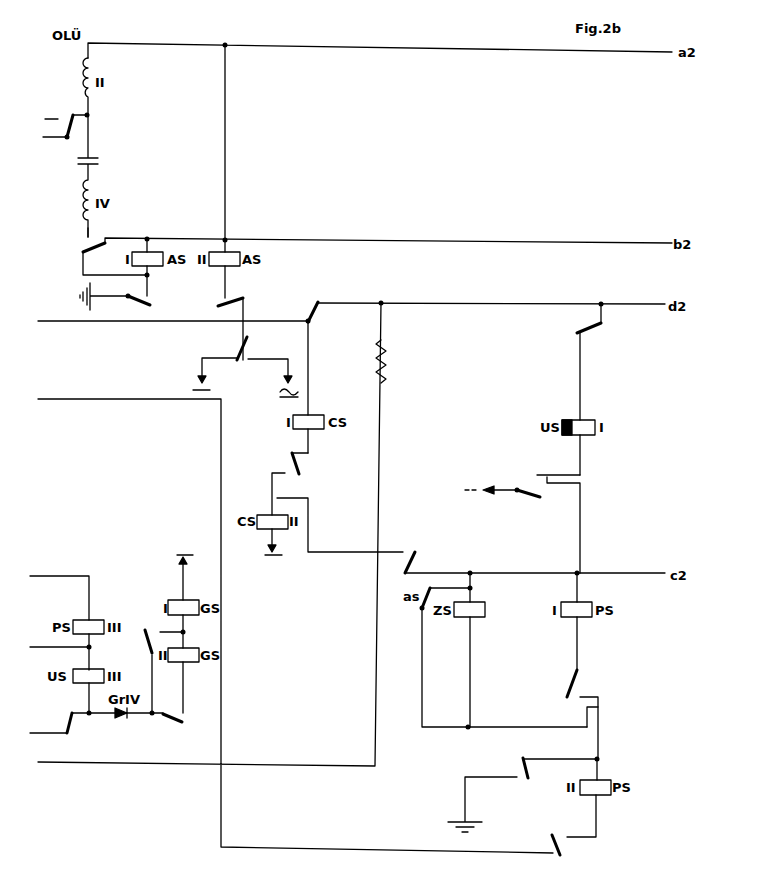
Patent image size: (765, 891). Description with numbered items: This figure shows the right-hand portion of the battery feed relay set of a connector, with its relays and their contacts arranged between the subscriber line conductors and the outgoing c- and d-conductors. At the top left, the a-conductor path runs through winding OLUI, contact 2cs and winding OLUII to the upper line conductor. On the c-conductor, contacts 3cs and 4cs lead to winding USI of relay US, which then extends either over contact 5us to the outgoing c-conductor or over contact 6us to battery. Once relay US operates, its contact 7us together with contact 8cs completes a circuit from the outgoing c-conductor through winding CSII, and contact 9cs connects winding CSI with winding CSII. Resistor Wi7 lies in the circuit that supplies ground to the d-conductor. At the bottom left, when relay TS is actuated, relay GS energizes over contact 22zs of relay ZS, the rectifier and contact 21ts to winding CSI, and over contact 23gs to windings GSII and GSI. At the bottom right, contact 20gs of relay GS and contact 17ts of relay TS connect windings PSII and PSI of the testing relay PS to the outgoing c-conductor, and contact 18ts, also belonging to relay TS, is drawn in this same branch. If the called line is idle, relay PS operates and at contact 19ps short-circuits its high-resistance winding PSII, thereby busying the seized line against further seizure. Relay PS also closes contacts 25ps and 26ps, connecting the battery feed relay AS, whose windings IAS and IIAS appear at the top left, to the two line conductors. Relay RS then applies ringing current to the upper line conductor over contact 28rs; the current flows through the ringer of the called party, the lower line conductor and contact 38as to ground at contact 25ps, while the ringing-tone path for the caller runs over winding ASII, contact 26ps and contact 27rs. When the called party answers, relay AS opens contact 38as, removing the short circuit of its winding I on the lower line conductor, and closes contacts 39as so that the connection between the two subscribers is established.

The relay CS contact 2cs is at (80, 122).
The relay CS contact 3cs is at (326, 312).
The relay CS contact 4cs is at (594, 362).
The relay US contact 5us is at (558, 516).
The relay US contact 6us is at (502, 485).
The relay US contact 7us is at (399, 554).
The relay CS contact 8cs is at (324, 512).
The relay CS contact 9cs is at (308, 464).
The relay TS contact 17ts is at (591, 714).
The contact 18ts of relay TS 18ts is at (610, 714).
The relay PS contact 19ps is at (524, 795).
The relay GS contact 20gs is at (575, 847).
The relay TS contact 21ts is at (150, 671).
The relay ZS contact 22zs is at (69, 723).
The relay GS contact 23gs is at (185, 715).
The relay PS contact 25ps is at (132, 296).
The relay PS contact 26ps is at (240, 321).
The relay RS contact 27rs is at (220, 363).
The relay RS contact 28rs is at (273, 369).
The relay AS contact 38as is at (99, 260).
The relay AS contact 39as is at (70, 233).
The resistor Wi7 is at (396, 361).